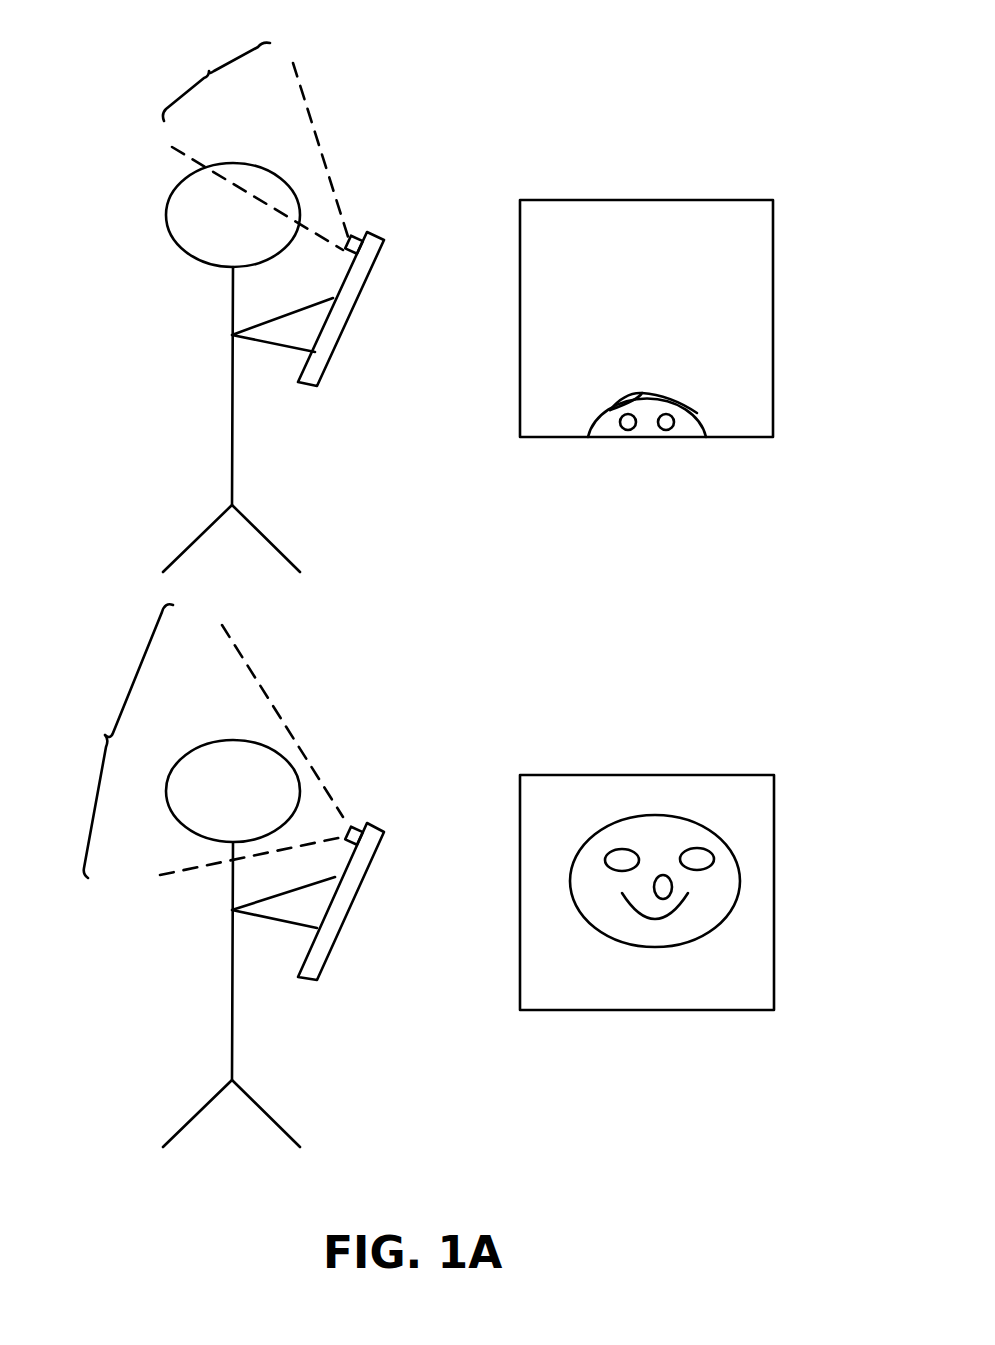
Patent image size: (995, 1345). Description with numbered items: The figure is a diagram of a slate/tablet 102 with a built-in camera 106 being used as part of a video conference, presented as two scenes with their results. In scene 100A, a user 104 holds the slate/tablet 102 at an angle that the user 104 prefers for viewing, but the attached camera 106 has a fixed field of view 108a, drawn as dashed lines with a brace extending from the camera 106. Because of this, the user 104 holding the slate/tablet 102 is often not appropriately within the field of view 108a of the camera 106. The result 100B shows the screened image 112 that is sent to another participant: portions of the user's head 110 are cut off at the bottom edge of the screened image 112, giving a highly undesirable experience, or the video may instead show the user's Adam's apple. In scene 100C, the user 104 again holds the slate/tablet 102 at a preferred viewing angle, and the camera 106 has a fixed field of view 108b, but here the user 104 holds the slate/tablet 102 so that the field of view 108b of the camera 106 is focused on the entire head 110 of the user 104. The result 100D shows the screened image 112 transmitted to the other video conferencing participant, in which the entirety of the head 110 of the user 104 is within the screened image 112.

The user holding slate/tablet at an angle 100A is at (90, 532).
The result of holding at angle 100B is at (667, 549).
The user holding slate/tablet at an angle 100C is at (90, 1109).
The result of holding at angle 100D is at (683, 1109).
The slate/tablet 102 is at (357, 300).
The user 104 is at (231, 422).
The camera 106 is at (360, 238).
The field of view 108a is at (217, 64).
The field of view 108b is at (93, 736).
The head 110 is at (179, 185).
The screened image 112 is at (807, 200).